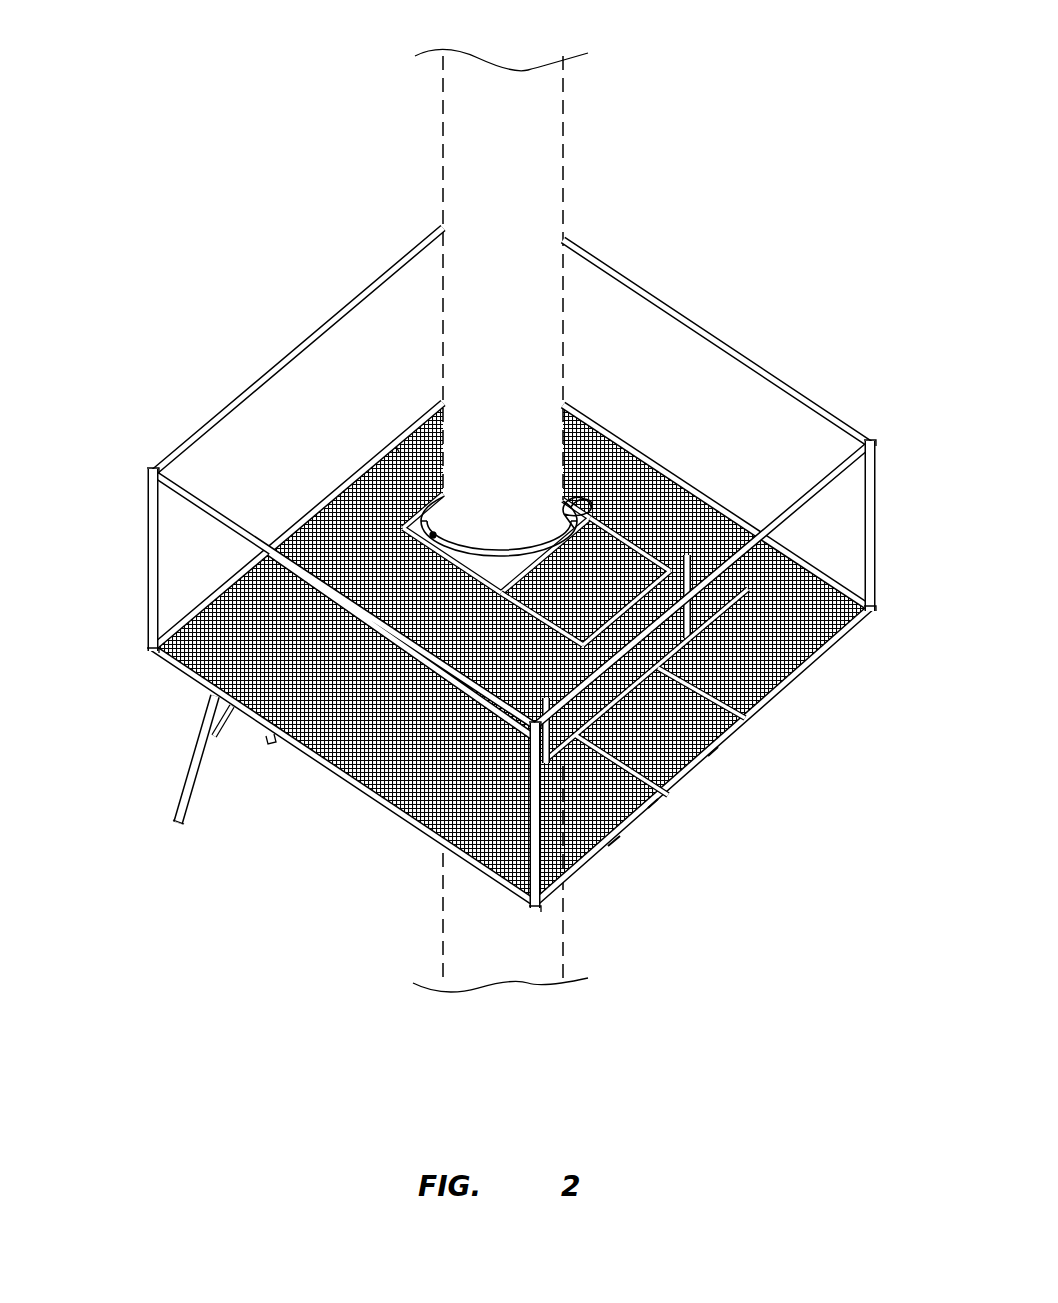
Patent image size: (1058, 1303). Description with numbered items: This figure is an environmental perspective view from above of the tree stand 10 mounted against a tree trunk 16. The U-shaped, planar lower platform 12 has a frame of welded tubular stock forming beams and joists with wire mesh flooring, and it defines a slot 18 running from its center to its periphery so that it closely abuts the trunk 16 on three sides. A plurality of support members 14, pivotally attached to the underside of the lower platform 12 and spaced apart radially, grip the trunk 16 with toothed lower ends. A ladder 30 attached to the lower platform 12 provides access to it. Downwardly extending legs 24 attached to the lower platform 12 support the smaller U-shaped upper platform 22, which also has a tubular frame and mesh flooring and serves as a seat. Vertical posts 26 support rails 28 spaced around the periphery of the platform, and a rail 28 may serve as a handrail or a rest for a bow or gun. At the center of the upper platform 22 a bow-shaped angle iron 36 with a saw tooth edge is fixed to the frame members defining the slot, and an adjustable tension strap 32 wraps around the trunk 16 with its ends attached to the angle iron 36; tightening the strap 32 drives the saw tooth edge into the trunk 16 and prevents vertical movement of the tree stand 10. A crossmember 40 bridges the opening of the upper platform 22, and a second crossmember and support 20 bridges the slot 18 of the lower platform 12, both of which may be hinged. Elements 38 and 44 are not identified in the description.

The tree stand 10 is at (820, 78).
The lower platform 12 is at (216, 583).
The support members 14 is at (855, 620).
The tree trunk 16 is at (557, 95).
The slot 18 is at (667, 788).
The crossmember and support 20 is at (703, 757).
The upper platform 22 is at (612, 434).
The legs 24 is at (745, 483).
The vertical posts 26 is at (139, 497).
The rails 28 is at (205, 415).
The ladder 30 is at (193, 767).
The tension strap 32 is at (526, 540).
The angle iron 36 is at (432, 508).
The fastener 38 is at (477, 552).
The crossmember 40 is at (552, 500).
The mesh 44 is at (390, 433).